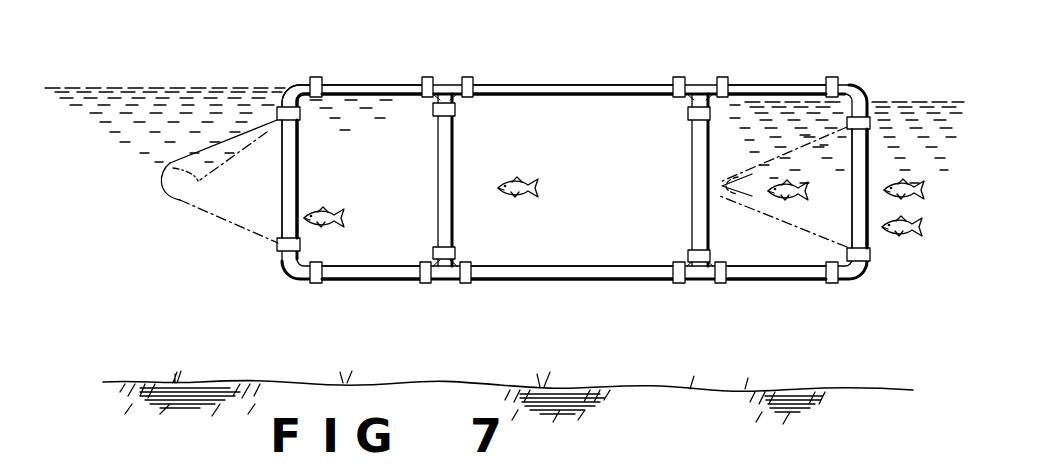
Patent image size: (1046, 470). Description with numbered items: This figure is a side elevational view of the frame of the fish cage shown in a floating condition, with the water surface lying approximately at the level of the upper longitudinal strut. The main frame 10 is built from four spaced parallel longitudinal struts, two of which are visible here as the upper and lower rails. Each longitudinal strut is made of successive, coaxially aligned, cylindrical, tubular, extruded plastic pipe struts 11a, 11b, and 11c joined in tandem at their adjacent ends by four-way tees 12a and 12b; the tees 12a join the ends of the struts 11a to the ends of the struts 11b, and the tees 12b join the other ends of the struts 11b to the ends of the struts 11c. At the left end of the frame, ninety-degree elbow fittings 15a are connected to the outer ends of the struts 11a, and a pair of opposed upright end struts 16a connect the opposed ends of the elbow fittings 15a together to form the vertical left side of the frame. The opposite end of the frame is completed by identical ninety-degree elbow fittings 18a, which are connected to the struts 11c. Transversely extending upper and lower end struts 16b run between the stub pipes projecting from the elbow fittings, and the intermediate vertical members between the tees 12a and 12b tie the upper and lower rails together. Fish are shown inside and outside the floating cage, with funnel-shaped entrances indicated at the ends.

The main frame 10 is at (614, 86).
The pipe struts 11a is at (372, 90).
The pipe struts 11b is at (528, 90).
The pipe struts 11c is at (752, 93).
The four-way tees 12a is at (455, 100).
The four-way tees 12b is at (690, 100).
The elbow fittings 15a is at (298, 90).
The upright end struts 16a is at (290, 181).
The end struts 16b is at (863, 230).
The elbow fittings 18a is at (848, 95).